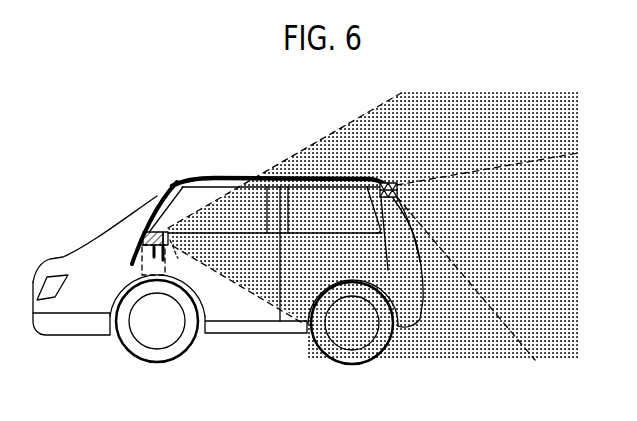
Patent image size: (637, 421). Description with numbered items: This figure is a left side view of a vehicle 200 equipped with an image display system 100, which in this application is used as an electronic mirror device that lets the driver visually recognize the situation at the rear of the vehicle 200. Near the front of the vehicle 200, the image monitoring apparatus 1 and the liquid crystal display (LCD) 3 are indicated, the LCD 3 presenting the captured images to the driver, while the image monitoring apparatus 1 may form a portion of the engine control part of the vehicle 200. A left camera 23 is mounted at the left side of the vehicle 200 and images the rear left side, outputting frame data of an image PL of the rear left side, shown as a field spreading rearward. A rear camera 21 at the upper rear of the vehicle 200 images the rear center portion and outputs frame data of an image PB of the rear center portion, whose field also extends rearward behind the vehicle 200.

The image display system 100 is at (112, 254).
The vehicle 200 is at (143, 220).
The image monitoring apparatus 1 is at (142, 272).
The liquid crystal display (LCD) 3 is at (174, 246).
The left camera 23 is at (273, 208).
The rear camera 21 is at (383, 183).
The image of the rear left side PL is at (487, 157).
The image of the rear center portion PB is at (466, 278).